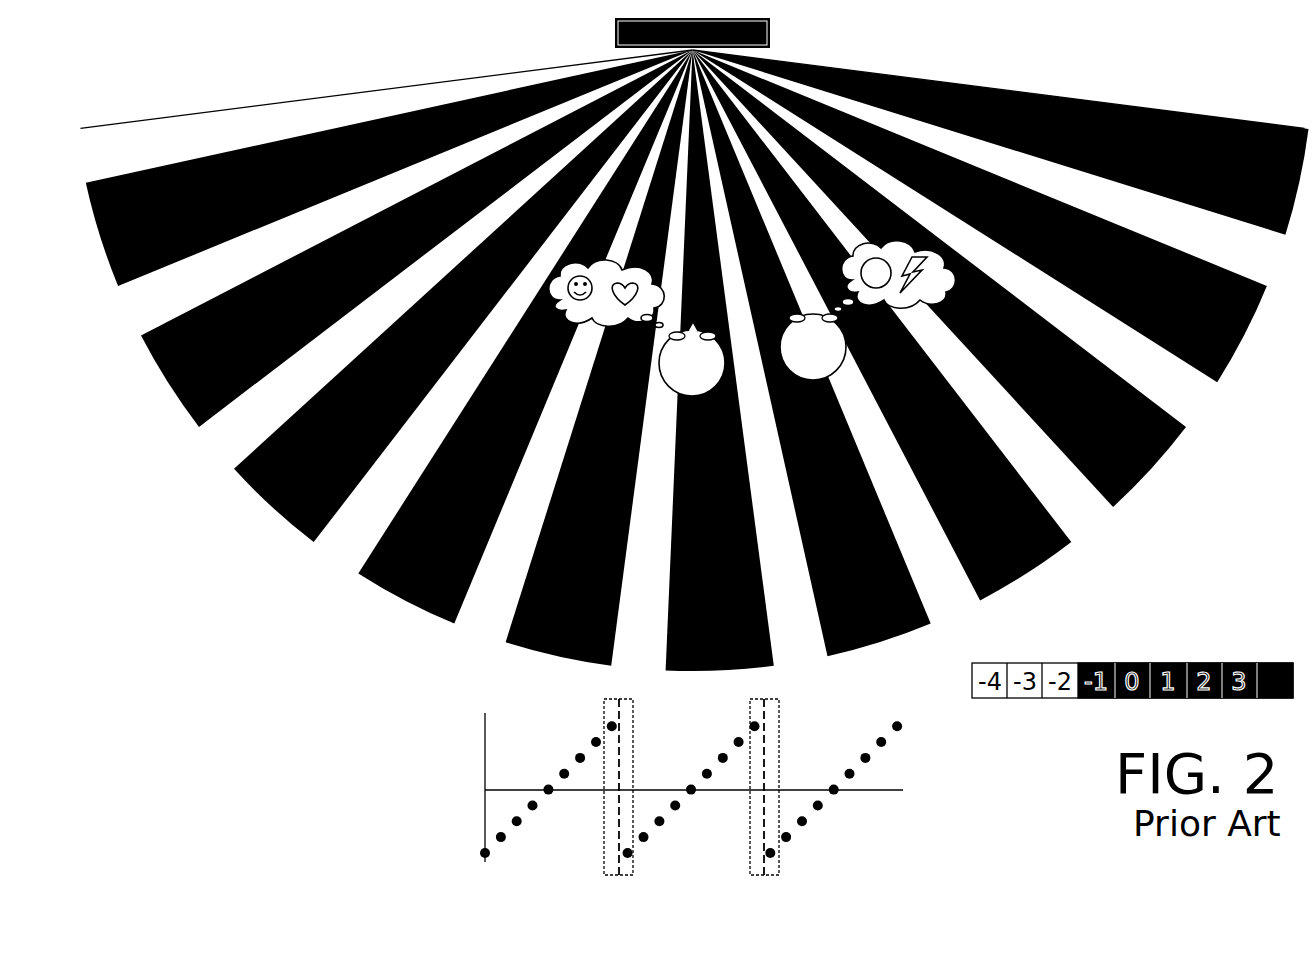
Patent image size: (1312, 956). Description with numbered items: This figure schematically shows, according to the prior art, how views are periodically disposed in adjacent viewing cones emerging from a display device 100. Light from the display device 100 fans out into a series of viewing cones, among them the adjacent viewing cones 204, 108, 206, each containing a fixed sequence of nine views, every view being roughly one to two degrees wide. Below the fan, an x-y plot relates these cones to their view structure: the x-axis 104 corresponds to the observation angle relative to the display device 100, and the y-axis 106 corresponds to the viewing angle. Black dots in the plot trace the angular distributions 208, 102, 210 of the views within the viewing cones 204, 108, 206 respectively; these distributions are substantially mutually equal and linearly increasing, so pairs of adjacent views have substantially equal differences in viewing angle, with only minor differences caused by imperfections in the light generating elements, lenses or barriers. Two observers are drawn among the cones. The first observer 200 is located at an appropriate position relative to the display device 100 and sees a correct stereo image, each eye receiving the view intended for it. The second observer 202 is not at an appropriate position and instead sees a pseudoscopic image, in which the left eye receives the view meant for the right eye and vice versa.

The display device 100 is at (760, 32).
The angular distribution 102 is at (707, 756).
The x-axis 104 is at (867, 792).
The y-axis 106 is at (485, 747).
The viewing cone 108 is at (682, 655).
The first observer 200 is at (692, 359).
The second observer 202 is at (813, 347).
The viewing cone 204 is at (559, 639).
The viewing cone 206 is at (832, 643).
The angular distribution 208 is at (561, 749).
The angular distribution 210 is at (860, 744).